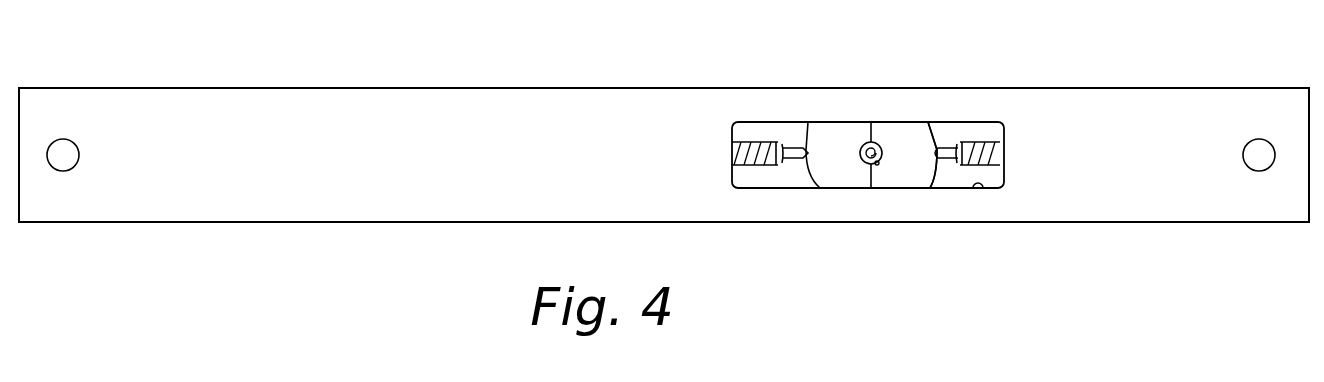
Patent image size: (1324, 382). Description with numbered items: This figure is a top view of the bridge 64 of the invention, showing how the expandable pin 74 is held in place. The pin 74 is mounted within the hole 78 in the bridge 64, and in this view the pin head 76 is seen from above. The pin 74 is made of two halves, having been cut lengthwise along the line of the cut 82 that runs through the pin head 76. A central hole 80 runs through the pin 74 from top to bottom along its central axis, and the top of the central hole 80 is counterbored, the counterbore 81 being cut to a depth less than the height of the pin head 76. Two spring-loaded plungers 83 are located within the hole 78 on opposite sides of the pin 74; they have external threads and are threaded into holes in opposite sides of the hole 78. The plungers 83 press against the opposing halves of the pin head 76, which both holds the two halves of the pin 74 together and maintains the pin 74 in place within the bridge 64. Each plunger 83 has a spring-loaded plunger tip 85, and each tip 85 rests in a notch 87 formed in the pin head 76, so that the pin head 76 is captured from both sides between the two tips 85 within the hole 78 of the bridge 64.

The bridge 64 is at (387, 88).
The expandable pin 74 is at (837, 143).
The pin head 76 is at (910, 125).
The hole 78 is at (980, 188).
The central hole 80 is at (873, 142).
The counterbore 81 is at (883, 164).
The cut 82 is at (868, 167).
The spring-loaded plunger 83 is at (748, 142).
The spring-loaded plunger tip 85 is at (790, 150).
The notch 87 is at (819, 188).